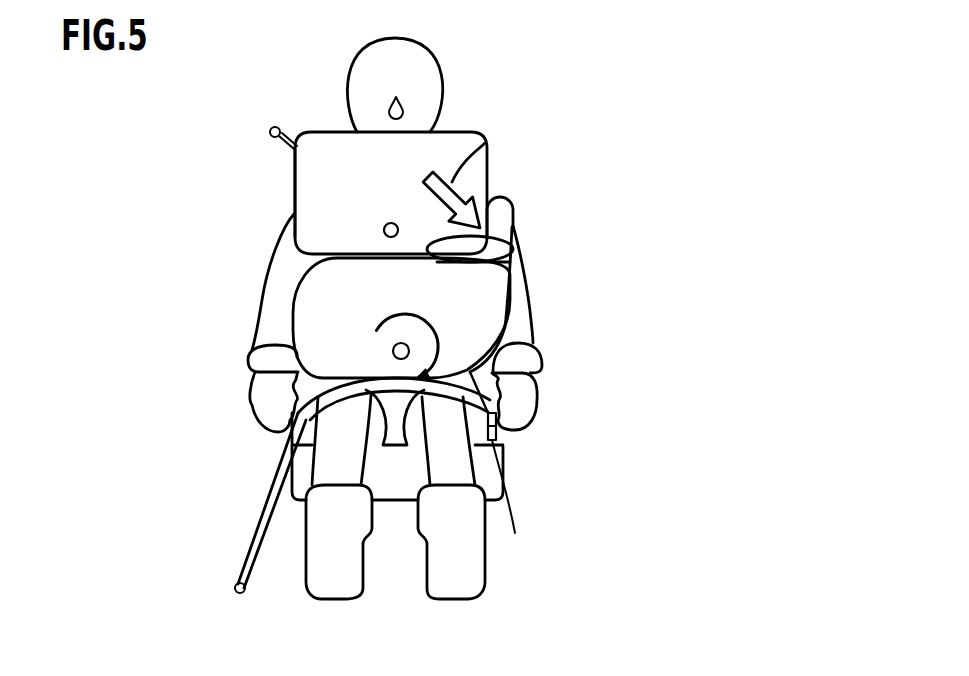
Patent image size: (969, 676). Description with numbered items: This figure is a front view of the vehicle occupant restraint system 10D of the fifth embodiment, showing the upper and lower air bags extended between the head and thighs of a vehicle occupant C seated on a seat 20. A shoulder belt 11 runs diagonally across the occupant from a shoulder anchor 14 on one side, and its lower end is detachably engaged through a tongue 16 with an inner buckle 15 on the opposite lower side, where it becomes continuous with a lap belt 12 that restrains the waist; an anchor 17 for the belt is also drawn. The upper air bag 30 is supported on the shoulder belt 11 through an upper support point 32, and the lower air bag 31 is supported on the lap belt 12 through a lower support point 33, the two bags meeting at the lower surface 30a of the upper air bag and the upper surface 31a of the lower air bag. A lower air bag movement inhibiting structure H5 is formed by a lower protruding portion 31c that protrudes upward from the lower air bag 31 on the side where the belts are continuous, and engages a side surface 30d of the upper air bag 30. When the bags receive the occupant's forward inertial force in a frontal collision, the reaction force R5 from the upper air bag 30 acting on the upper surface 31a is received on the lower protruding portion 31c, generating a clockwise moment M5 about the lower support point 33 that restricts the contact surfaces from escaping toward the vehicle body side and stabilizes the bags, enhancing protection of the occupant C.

The vehicle occupant restraint system 10D is at (557, 82).
The vehicle occupant C is at (346, 50).
The upper air bag 30 is at (354, 172).
The shoulder belt 11 is at (295, 146).
The shoulder anchor 14 is at (270, 132).
The upper support point 32 is at (385, 228).
The lower support point 33 is at (395, 345).
The lower air bag 31 is at (326, 348).
The upper surface 31a is at (445, 237).
The lower protruding portion 31c is at (500, 228).
The lower surface 30a is at (437, 263).
The side surface 30d is at (510, 214).
The reaction force R5 is at (485, 143).
The lower air bag movement inhibiting structure H5 is at (514, 175).
The clockwise moment M5 is at (445, 340).
The seat 20 is at (523, 470).
The tongue 16 is at (537, 414).
The inner buckle 15 is at (504, 431).
The lap belt 12 is at (512, 504).
The lap belt anchor 17 is at (235, 588).